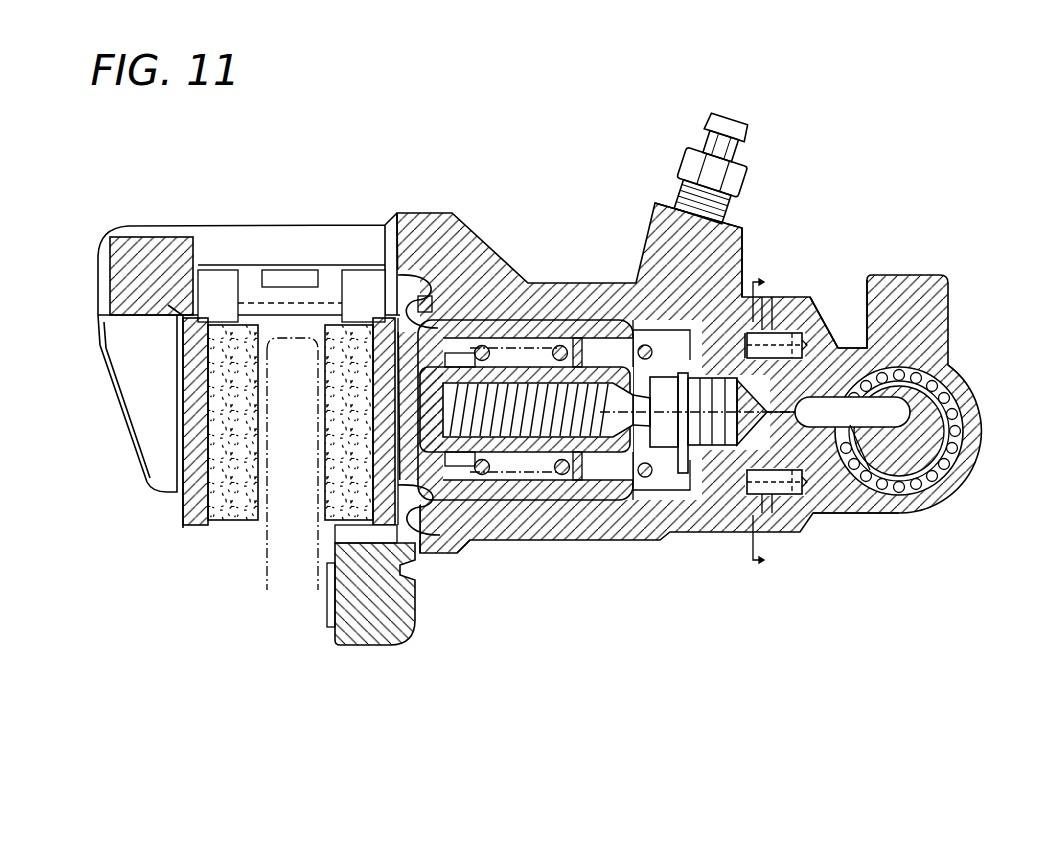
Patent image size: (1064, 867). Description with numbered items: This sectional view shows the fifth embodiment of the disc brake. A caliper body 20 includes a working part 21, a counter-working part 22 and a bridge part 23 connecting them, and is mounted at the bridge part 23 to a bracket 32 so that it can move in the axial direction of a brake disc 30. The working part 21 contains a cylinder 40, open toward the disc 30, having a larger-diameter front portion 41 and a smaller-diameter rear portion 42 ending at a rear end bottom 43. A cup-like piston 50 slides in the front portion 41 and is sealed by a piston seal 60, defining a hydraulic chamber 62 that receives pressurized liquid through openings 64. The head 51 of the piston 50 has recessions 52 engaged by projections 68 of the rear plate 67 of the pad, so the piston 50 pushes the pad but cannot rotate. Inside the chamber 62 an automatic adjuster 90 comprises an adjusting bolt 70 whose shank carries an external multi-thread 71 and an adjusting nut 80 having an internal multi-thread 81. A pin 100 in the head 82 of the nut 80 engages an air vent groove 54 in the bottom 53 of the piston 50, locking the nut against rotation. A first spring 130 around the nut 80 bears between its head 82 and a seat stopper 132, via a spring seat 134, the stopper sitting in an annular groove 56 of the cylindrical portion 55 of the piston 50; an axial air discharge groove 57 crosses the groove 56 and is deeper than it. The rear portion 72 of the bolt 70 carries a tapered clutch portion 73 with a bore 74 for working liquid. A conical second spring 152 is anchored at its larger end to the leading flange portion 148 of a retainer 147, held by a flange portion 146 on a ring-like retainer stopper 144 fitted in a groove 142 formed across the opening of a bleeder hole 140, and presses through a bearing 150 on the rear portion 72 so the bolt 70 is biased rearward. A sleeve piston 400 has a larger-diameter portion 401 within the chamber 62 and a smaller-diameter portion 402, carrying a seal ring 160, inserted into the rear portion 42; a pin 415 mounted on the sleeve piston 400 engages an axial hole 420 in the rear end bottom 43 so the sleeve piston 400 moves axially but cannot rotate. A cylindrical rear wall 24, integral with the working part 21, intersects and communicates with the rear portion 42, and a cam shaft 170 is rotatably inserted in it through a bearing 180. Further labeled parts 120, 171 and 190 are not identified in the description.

The caliper body 20 is at (292, 226).
The working part 21 is at (430, 248).
The counter-working part 22 is at (128, 388).
The bridge part 23 is at (238, 226).
The rear wall 24 is at (964, 393).
The brake disc 30 is at (277, 573).
The bracket 32 is at (358, 632).
The cylinder 40 is at (487, 553).
The front portion of the cylinder 41 is at (556, 542).
The rear portion of the cylinder 42 is at (900, 350).
The rear end bottom of the cylinder 43 is at (718, 532).
The piston 50 is at (547, 542).
The head of the piston 51 is at (395, 357).
The recessions 52 is at (396, 470).
The bottom of the piston 53 is at (443, 555).
The air vent groove 54 is at (405, 390).
The cylindrical portion of the piston 55 is at (505, 548).
The annular groove 56 is at (590, 540).
The air discharge groove 57 is at (620, 310).
The piston seal 60 is at (495, 305).
The hydraulic chamber 62 is at (590, 300).
The opening 64 is at (722, 540).
The rear plate 67 is at (387, 527).
The projections 68 is at (396, 428).
The adjusting bolt 70 is at (648, 540).
The external multi-thread 71 is at (520, 318).
The rear portion of the adjusting bolt 72 is at (800, 322).
The tapered clutch portion 73 is at (700, 532).
The bore 74 is at (760, 300).
The adjusting nut 80 is at (632, 520).
The internal multi-thread 81 is at (556, 300).
The head of the adjusting nut 82 is at (460, 553).
The automatic adjuster 90 is at (640, 703).
The pin 100 is at (466, 300).
The plug shoulder 120 is at (790, 300).
The first spring 130 is at (467, 553).
The seat stopper 132 is at (580, 300).
The spring seat 134 is at (563, 305).
The bleeder hole 140 is at (664, 250).
The groove 142 is at (643, 540).
The retainer stopper 144 is at (668, 300).
The flange portion 146 is at (746, 285).
The retainer 147 is at (675, 520).
The leading flange portion 148 is at (605, 540).
The bearing 150 is at (690, 540).
The second spring 152 is at (638, 300).
The seal ring 160 is at (877, 517).
The cam shaft 170 is at (933, 425).
The bearing race 171 is at (947, 365).
The bearing 180 is at (952, 458).
The bearing housing 190 is at (920, 493).
The sleeve piston 400 is at (812, 300).
The larger-diameter portion of the sleeve piston 401 is at (705, 535).
The smaller-diameter portion of the sleeve piston 402 is at (860, 290).
The pin 415 is at (833, 320).
The hole 420 is at (855, 322).